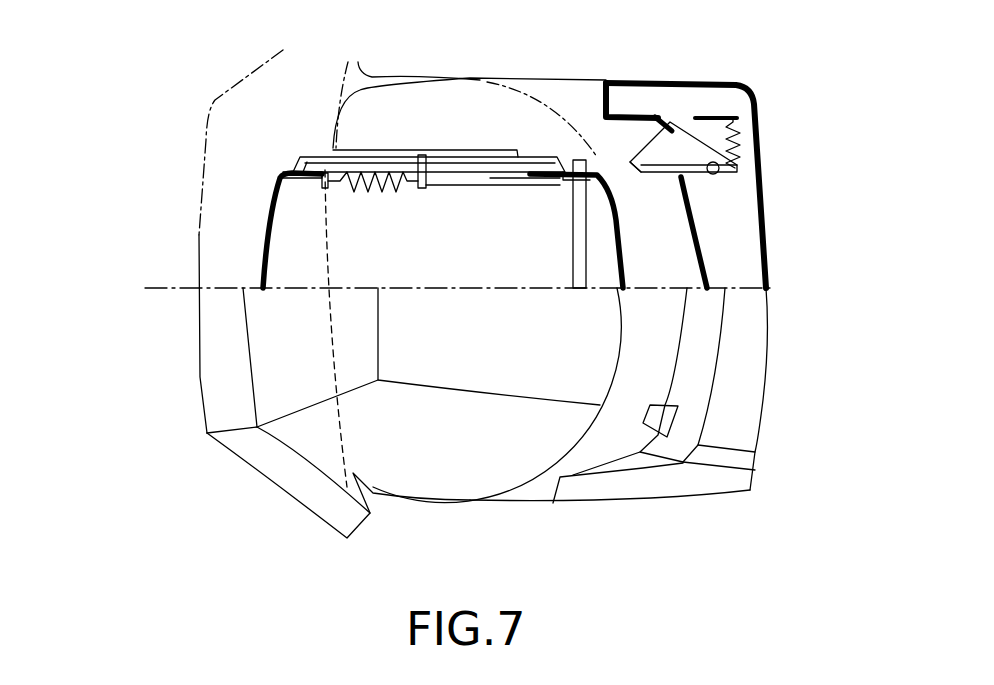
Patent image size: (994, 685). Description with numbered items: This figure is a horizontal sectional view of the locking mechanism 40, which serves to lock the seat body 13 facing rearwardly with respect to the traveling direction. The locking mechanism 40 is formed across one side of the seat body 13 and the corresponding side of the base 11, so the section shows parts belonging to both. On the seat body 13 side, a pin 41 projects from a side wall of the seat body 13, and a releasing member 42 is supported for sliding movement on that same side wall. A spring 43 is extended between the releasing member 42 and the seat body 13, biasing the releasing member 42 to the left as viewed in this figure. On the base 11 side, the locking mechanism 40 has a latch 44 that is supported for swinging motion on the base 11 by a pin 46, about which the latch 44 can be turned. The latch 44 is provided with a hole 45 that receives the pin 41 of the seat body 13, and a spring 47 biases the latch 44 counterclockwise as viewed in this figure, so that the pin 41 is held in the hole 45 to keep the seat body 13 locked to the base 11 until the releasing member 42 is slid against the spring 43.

The base 11 is at (768, 397).
The seat body 13 is at (205, 402).
The locking mechanism 40 is at (507, 98).
The pin 41 is at (578, 233).
The releasing member 42 is at (455, 150).
The spring 43 is at (378, 190).
The latch 44 is at (682, 140).
The hole 45 is at (670, 177).
The pin 46 is at (708, 176).
The spring 47 is at (737, 148).